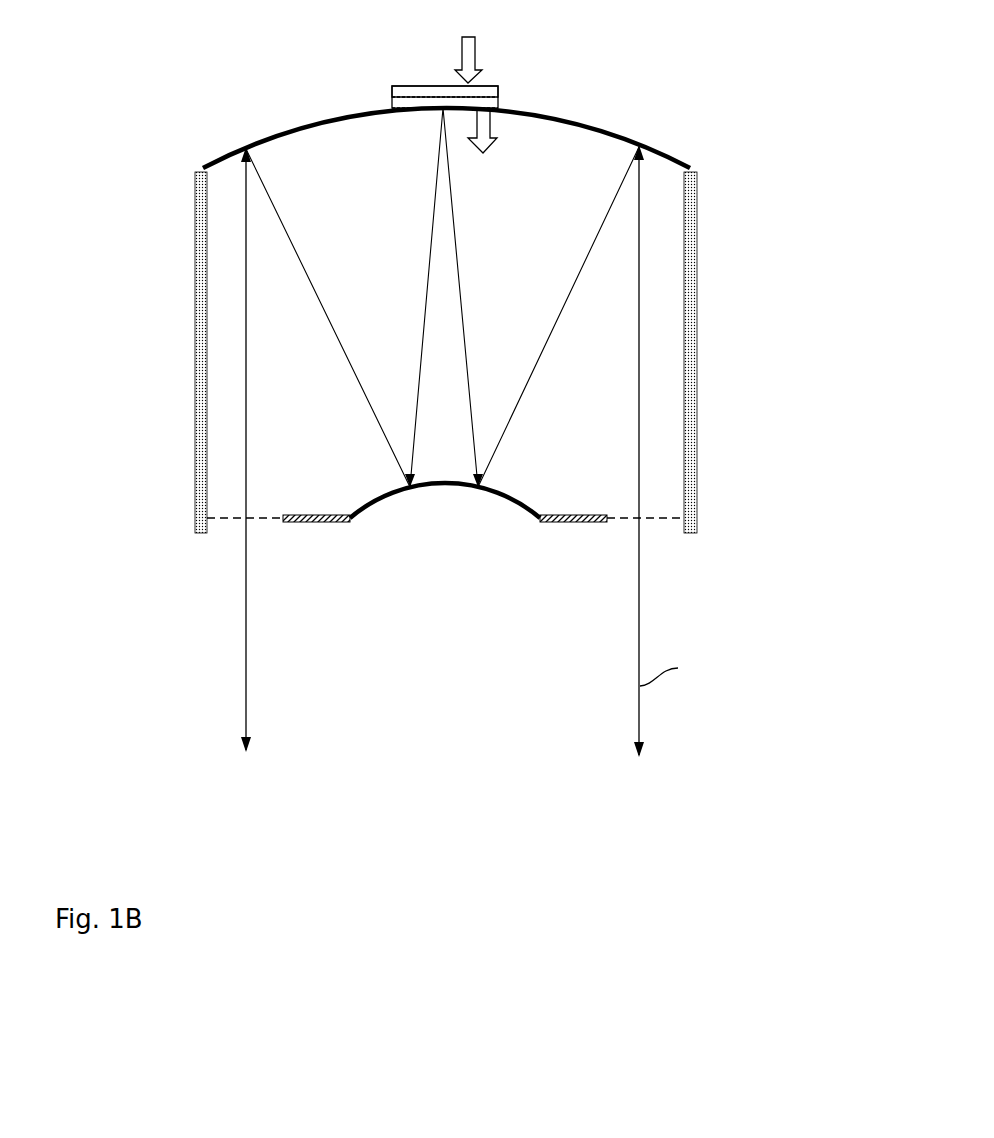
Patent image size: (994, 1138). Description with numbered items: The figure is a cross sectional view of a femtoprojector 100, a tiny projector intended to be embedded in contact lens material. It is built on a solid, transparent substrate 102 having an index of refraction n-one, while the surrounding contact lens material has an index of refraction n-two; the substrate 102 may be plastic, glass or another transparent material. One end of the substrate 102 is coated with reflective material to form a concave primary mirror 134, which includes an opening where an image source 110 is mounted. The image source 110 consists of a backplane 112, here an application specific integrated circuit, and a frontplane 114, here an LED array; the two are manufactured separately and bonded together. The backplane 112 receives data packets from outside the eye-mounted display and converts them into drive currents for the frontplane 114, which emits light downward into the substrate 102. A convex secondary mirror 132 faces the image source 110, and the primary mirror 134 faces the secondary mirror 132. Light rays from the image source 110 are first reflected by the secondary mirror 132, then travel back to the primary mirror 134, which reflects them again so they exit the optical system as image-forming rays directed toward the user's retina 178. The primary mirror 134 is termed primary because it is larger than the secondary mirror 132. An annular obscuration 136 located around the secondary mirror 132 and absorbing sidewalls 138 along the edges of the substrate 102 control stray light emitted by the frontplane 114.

The femtoprojector 100 is at (135, 35).
The solid transparent substrate 102 is at (364, 193).
The image source 110 is at (392, 85).
The backplane 112 is at (498, 90).
The frontplane 114 is at (498, 103).
The secondary mirror 132 is at (367, 507).
The primary mirror 134 is at (282, 130).
The annular obscuration 136 is at (312, 525).
The absorbing sidewalls 138 is at (195, 400).
The retina 178 is at (538, 451).